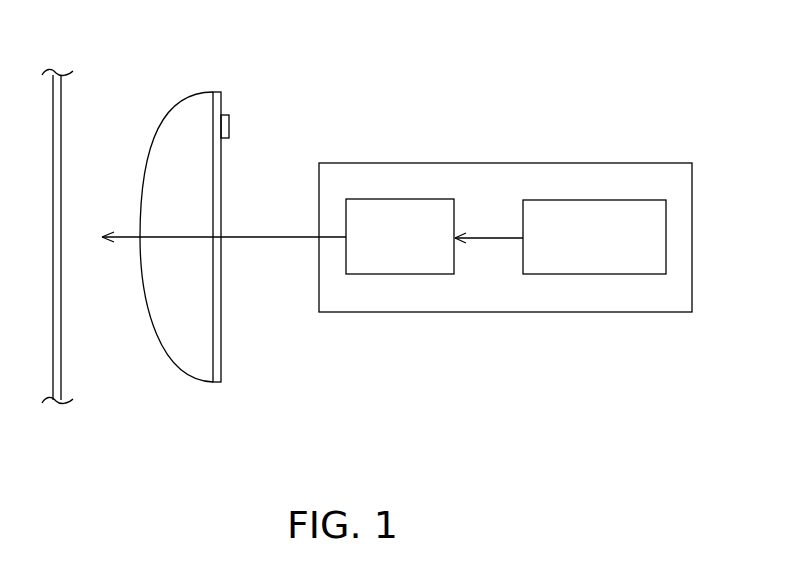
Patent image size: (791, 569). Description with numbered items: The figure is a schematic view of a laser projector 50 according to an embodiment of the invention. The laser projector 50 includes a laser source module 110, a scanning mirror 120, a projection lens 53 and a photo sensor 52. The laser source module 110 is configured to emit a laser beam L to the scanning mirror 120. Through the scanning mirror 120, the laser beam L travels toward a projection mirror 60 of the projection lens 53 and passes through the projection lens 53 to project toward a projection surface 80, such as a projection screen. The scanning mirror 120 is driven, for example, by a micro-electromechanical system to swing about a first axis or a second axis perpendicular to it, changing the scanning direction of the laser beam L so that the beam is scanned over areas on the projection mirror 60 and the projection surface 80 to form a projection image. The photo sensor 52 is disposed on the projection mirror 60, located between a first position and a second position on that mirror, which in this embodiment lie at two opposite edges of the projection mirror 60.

The laser projector 50 is at (472, 87).
The photo sensor 52 is at (229, 127).
The projection lens 53 is at (187, 353).
The projection mirror 60 is at (222, 334).
The projection surface 80 is at (57, 98).
The laser source module 110 is at (582, 275).
The scanning mirror 120 is at (400, 275).
The laser beam L is at (493, 238).